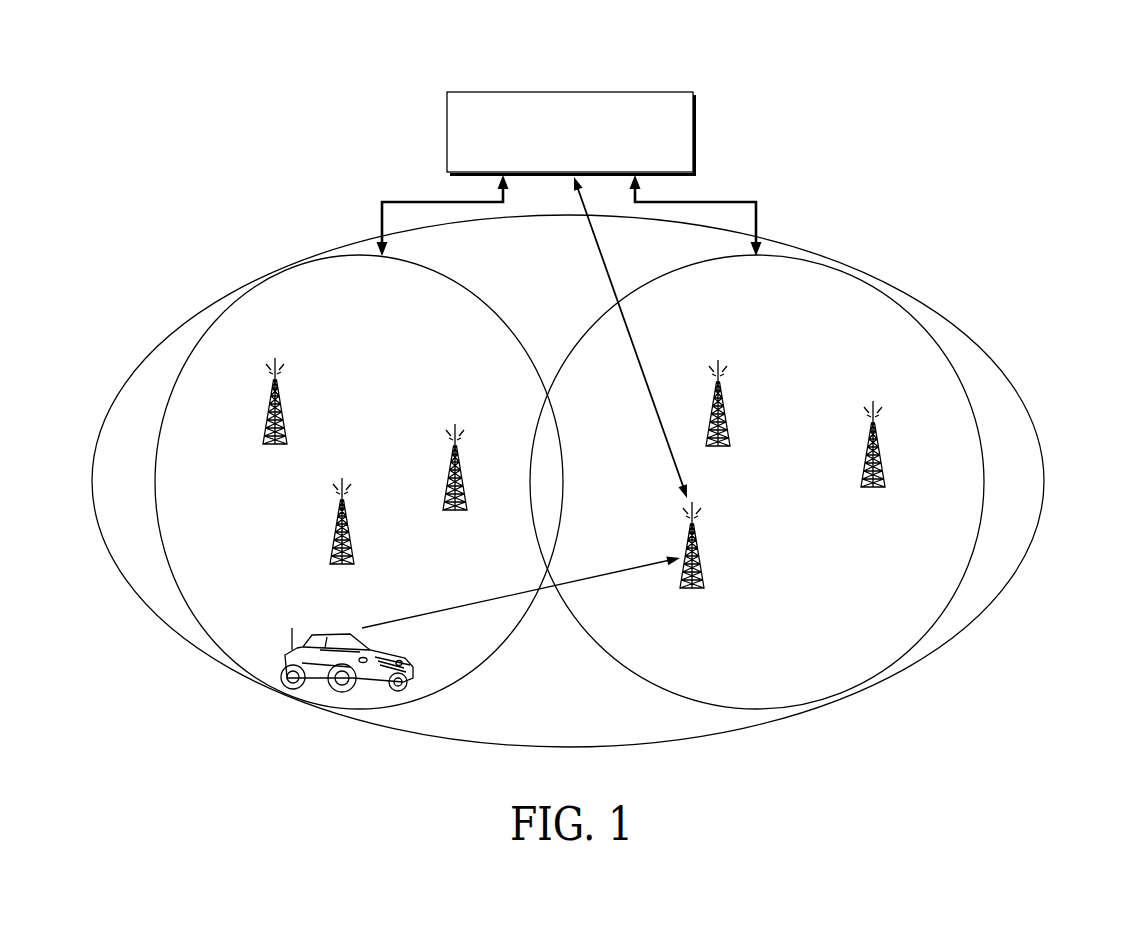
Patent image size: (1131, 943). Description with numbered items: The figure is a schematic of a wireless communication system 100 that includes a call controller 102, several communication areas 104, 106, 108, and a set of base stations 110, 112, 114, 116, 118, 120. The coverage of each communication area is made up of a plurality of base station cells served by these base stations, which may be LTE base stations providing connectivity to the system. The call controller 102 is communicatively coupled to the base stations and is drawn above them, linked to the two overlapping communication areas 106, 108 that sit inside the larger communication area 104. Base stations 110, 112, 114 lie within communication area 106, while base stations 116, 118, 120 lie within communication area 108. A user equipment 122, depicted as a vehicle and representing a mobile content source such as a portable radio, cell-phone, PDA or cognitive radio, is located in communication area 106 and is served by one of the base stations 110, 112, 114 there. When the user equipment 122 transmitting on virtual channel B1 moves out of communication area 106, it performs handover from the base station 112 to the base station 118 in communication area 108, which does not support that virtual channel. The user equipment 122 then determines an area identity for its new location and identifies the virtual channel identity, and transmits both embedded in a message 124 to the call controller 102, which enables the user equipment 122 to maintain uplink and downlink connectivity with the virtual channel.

The wireless communication system 100 is at (1062, 107).
The call controller 102 is at (671, 92).
The communication area 104 is at (1038, 421).
The communication area 106 is at (207, 327).
The communication area 108 is at (812, 255).
The base station 110 is at (283, 418).
The base station 112 is at (347, 540).
The base station 114 is at (461, 485).
The base station 116 is at (724, 420).
The base station 118 is at (699, 565).
The base station 120 is at (879, 463).
The user equipment 122 is at (417, 658).
The message 124 is at (640, 369).